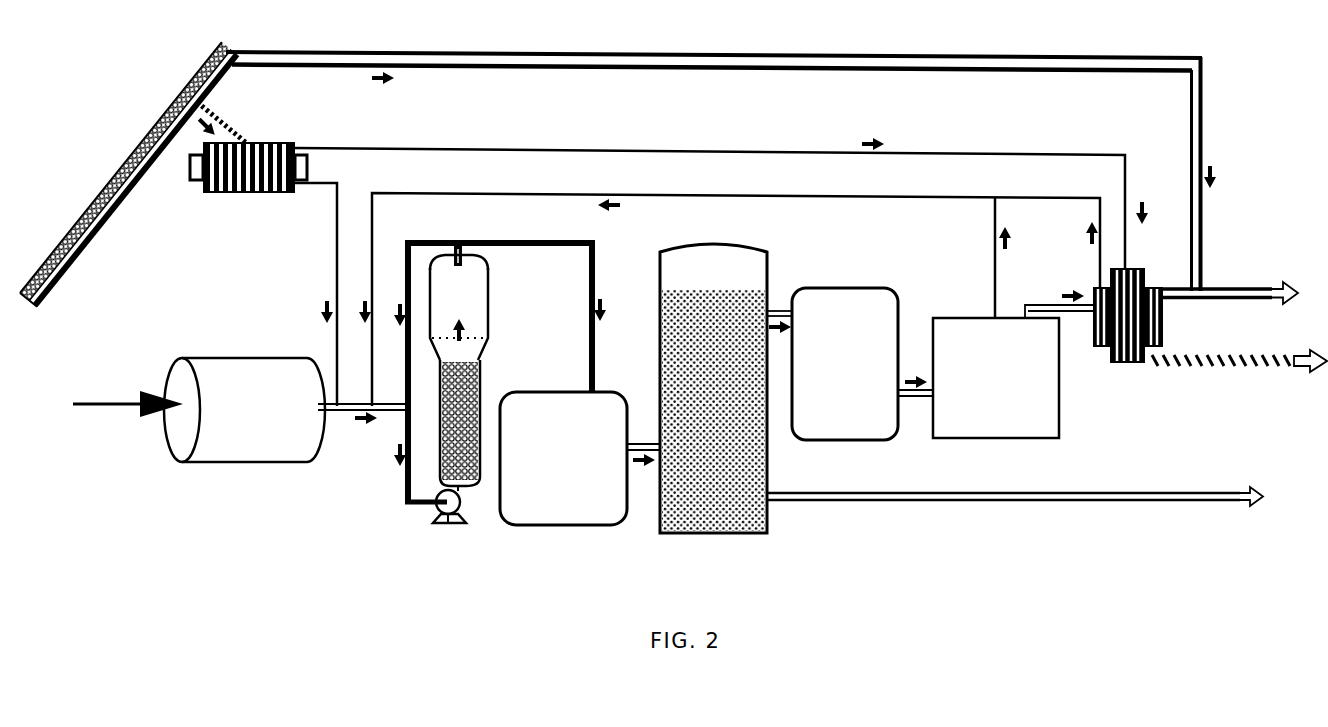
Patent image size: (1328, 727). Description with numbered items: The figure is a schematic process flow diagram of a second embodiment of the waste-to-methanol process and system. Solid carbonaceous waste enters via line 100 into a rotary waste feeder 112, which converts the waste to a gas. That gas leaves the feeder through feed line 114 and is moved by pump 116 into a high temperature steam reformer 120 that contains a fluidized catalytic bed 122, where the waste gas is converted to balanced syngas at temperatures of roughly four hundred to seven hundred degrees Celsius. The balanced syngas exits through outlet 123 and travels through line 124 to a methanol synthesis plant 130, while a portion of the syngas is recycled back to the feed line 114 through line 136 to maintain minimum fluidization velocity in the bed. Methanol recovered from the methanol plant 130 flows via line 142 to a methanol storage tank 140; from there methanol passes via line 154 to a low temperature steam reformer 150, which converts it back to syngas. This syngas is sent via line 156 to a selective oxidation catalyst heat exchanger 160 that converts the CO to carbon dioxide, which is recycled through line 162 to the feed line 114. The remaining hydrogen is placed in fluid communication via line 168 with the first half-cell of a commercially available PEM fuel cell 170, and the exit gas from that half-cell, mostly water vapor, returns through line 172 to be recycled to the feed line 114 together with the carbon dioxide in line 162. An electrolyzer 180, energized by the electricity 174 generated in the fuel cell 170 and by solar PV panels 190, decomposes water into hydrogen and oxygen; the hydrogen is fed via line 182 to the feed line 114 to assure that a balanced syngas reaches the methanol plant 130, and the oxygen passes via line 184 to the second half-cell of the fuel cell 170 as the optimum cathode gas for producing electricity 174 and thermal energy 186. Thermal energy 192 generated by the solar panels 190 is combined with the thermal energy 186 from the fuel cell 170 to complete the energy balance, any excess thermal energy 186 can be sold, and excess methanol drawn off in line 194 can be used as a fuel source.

The line 100 is at (97, 410).
The rotary waste feeder 112 is at (255, 358).
The feed line 114 is at (327, 412).
The pump 116 is at (435, 511).
The high temperature steam reformer 120 is at (489, 328).
The fluidized catalytic bed 122 is at (480, 373).
The outlet 123 is at (463, 254).
The line 124 is at (522, 242).
The methanol synthesis plant 130 is at (540, 527).
The line 136 is at (425, 242).
The methanol storage tank 140 is at (735, 247).
The line 142 is at (645, 442).
The low temperature steam reformer 150 is at (860, 288).
The line 154 is at (773, 310).
The line 156 is at (912, 400).
The selective oxidation catalyst heat exchanger 160 is at (1012, 440).
The line 162 is at (995, 222).
The line 168 is at (1058, 302).
The PEM fuel cell 170 is at (1163, 318).
The line 172 is at (1062, 196).
The electricity 174 is at (1190, 362).
The electrolyzer 180 is at (262, 142).
The line 182 is at (336, 228).
The line 184 is at (694, 150).
The thermal energy 186 is at (1232, 287).
The solar PV panels 190 is at (167, 102).
The thermal energy 192 is at (935, 53).
The line 194 is at (1130, 492).